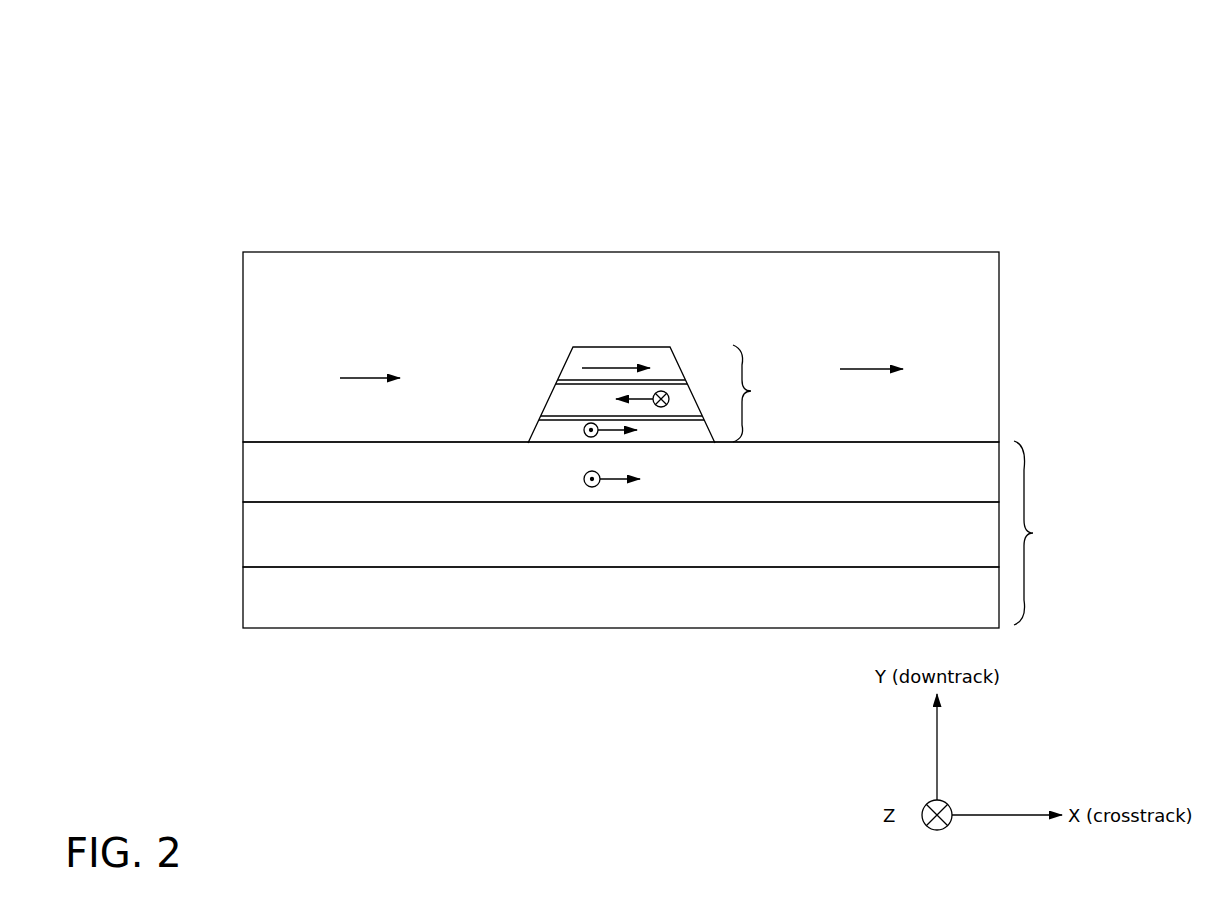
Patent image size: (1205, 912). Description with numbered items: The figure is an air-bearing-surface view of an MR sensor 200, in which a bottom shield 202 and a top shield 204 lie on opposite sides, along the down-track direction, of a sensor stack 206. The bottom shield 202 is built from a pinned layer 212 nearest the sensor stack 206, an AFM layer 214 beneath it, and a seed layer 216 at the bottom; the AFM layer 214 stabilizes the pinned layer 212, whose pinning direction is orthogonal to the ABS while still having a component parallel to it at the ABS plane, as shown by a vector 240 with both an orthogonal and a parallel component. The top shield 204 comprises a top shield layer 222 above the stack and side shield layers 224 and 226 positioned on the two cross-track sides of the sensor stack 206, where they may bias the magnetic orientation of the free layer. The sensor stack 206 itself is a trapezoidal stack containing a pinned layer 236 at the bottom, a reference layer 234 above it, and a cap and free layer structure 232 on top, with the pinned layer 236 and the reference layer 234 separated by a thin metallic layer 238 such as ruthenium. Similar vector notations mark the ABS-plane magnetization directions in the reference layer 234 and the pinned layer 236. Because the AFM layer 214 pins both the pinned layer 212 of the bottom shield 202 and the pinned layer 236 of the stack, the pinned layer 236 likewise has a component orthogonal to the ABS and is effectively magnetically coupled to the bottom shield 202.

The MR sensor 200 is at (163, 93).
The bottom shield 202 is at (1063, 533).
The top shield 204 is at (243, 333).
The sensor stack 206 is at (757, 391).
The pinned layer 212 is at (243, 474).
The AFM layer 214 is at (243, 553).
The seed layer 216 is at (243, 617).
The top shield layer 222 is at (569, 316).
The side shield layer 224 is at (325, 413).
The side shield layer 226 is at (920, 391).
The cap and free layer structure 232 is at (567, 361).
The reference layer 234 is at (549, 398).
The pinned layer 236 is at (530, 433).
The metallic layer 238 is at (668, 428).
The vector 240 is at (614, 490).